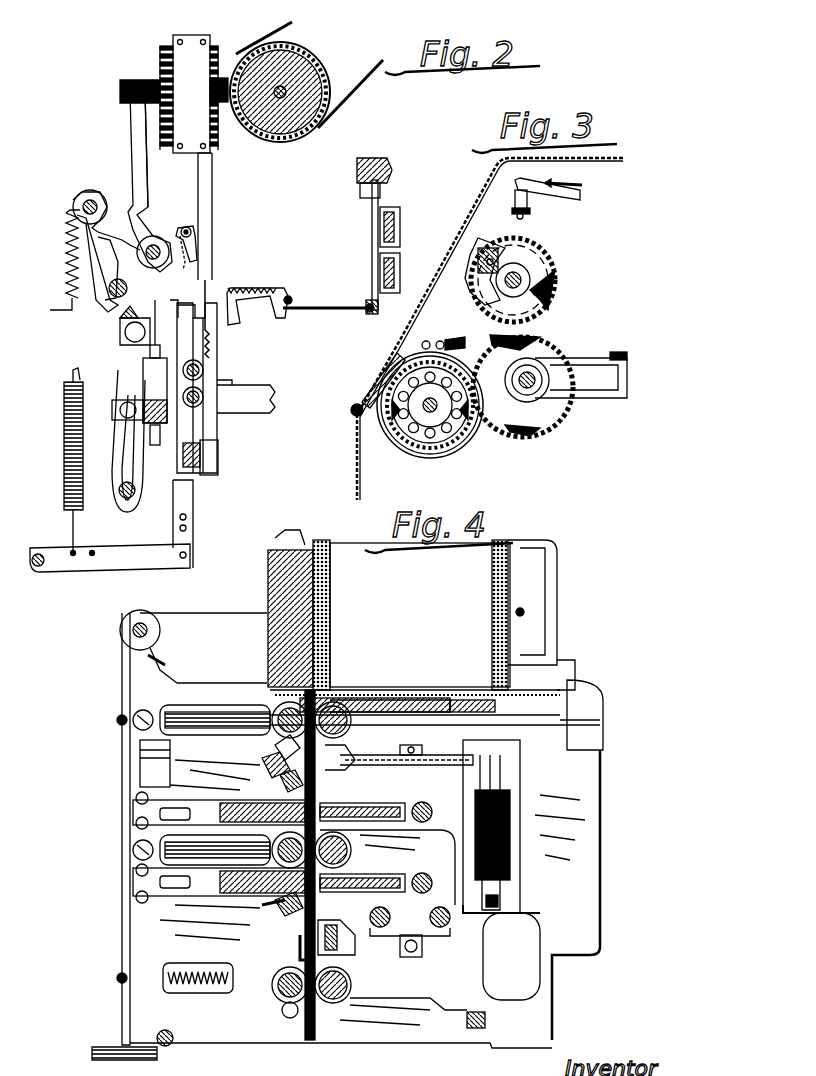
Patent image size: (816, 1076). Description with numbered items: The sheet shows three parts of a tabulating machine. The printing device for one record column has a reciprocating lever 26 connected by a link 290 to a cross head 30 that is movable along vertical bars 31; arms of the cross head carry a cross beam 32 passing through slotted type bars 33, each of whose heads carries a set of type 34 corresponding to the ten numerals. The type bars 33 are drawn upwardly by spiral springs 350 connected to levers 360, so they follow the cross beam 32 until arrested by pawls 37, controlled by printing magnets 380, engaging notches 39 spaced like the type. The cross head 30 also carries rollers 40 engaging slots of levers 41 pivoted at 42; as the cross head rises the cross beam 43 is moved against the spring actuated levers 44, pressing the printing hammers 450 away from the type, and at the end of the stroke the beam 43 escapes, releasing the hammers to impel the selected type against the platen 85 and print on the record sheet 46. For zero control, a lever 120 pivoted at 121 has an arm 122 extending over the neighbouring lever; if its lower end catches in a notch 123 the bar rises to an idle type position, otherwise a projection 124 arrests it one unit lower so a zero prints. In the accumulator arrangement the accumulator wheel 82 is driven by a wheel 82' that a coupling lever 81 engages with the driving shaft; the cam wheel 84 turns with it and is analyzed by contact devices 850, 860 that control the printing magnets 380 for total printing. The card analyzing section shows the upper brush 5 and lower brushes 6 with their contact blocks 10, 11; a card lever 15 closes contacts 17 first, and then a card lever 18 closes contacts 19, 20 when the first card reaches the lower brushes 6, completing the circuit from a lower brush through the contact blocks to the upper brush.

In FIG. 2, the type 34 is at (212, 45).
In FIG. 2, the platen 85 is at (310, 56).
In FIG. 2, the record sheet 46 is at (309, 75).
In FIG. 2, the printing hammers 450 is at (145, 175).
In FIG. 2, the pivot 121 is at (190, 231).
In FIG. 2, the lever 120 is at (195, 242).
In FIG. 2, the arm 122 is at (188, 250).
In FIG. 2, the notch 123 is at (183, 288).
In FIG. 2, the projection 124 is at (186, 303).
In FIG. 2, the type bar 33 is at (212, 257).
In FIG. 2, the levers 44 is at (95, 259).
In FIG. 2, the cross beam 43 is at (125, 315).
In FIG. 2, the vertical bars 31 is at (138, 323).
In FIG. 2, the cross head 30 is at (148, 388).
In FIG. 2, the rollers 40 is at (118, 418).
In FIG. 2, the levers 41 is at (112, 466).
In FIG. 2, the pivot 42 is at (125, 498).
In FIG. 2, the spiral springs 350 is at (64, 432).
In FIG. 2, the levers 360 is at (120, 556).
In FIG. 2, the notches 39 is at (217, 352).
In FIG. 2, the link 290 is at (205, 380).
In FIG. 2, the cross beam 32 is at (205, 458).
In FIG. 2, the reciprocating lever 26 is at (268, 395).
In FIG. 2, the pawls 37 is at (300, 309).
In FIG. 2, the printing magnets 380 is at (375, 235).
In FIG. 3, the contact device 860 is at (582, 185).
In FIG. 3, the contact device 850 is at (548, 201).
In FIG. 3, the cam wheel 84 is at (490, 248).
In FIG. 3, the accumulator wheel 82 is at (417, 396).
In FIG. 3, the driving wheel 82' is at (524, 390).
In FIG. 3, the coupling lever 81 is at (590, 366).
In FIG. 4, the upper brush 5 is at (272, 760).
In FIG. 4, the card lever 15 is at (282, 786).
In FIG. 4, the contact block 10 is at (352, 762).
In FIG. 4, the contacts 17 is at (490, 760).
In FIG. 4, the contact 20 is at (505, 882).
In FIG. 4, the contact 19 is at (472, 914).
In FIG. 4, the contact block 11 is at (350, 940).
In FIG. 4, the lower brushes 6 is at (292, 915).
In FIG. 4, the card lever 18 is at (302, 945).